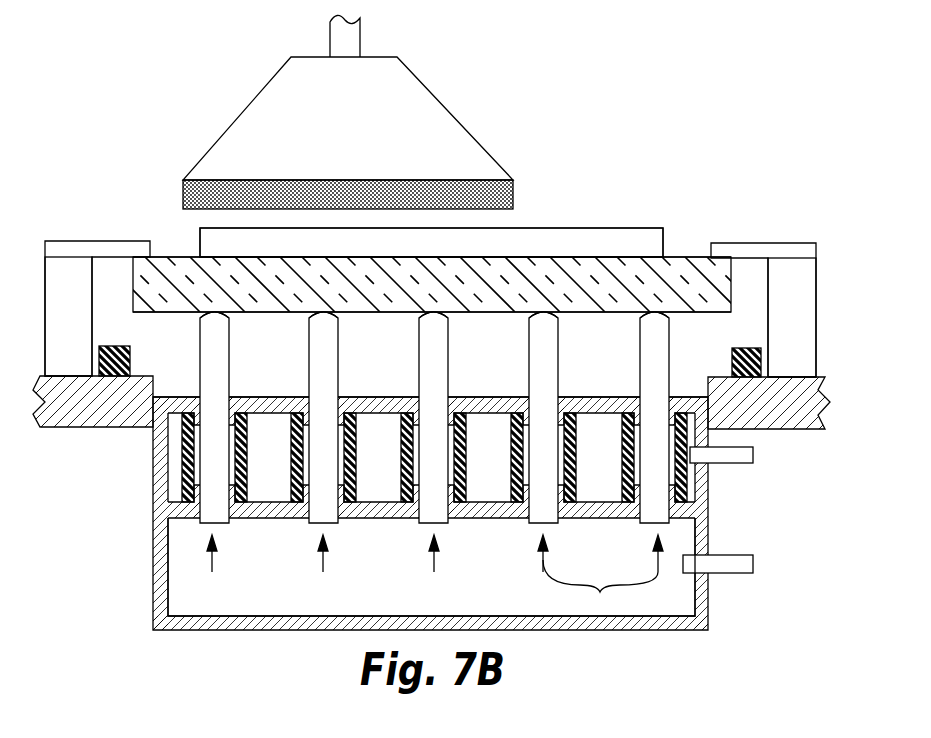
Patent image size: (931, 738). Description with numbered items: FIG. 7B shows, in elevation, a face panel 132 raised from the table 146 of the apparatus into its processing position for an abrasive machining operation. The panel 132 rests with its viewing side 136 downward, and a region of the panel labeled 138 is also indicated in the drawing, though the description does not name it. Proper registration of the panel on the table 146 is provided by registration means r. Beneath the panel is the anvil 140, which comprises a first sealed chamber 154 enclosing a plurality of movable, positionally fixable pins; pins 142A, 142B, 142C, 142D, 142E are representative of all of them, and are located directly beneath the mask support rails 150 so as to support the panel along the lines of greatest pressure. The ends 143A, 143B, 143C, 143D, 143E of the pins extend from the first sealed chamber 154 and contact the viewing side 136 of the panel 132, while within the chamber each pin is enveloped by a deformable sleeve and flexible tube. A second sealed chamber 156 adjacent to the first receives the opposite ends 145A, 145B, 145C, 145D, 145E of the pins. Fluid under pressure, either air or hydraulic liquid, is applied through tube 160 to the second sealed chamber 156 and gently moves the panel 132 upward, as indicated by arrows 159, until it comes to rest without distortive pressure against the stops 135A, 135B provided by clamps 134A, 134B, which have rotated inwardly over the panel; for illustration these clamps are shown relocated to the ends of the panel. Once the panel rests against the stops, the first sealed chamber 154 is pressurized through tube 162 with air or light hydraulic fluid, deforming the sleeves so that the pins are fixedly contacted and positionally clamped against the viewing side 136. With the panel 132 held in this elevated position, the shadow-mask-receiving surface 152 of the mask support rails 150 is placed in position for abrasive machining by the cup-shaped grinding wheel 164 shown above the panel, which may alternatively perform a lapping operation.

The panel 132 is at (733, 278).
The clamp 134A is at (142, 237).
The clamp 134B is at (754, 240).
The stop 135A is at (115, 258).
The stop 135B is at (768, 280).
The viewing side 136 is at (689, 314).
The plate top surface 138 is at (181, 257).
The anvil 140 is at (153, 556).
The pin 142A is at (200, 352).
The pin 142B is at (309, 352).
The pin 142C is at (419, 352).
The pin 142D is at (529, 352).
The pin 142E is at (640, 352).
The pin end 143A is at (224, 314).
The pin end 143B is at (334, 314).
The pin end 143C is at (444, 314).
The pin end 143D is at (554, 314).
The pin end 143E is at (667, 318).
The opposite pin end 145A is at (219, 525).
The opposite pin end 145B is at (330, 525).
The opposite pin end 145C is at (441, 525).
The opposite pin end 145D is at (551, 525).
The opposite pin end 145E is at (651, 528).
The table 146 is at (824, 410).
The mask support rail 150 is at (665, 247).
The shadow-mask-receiving surface 152 is at (582, 228).
The first sealed chamber 154 is at (173, 452).
The second sealed chamber 156 is at (413, 597).
The arrows 159 is at (600, 588).
The tube 160 is at (727, 573).
The tube 162 is at (727, 463).
The cup-shaped grinding wheel 164 is at (490, 152).
The registration means r is at (108, 346).